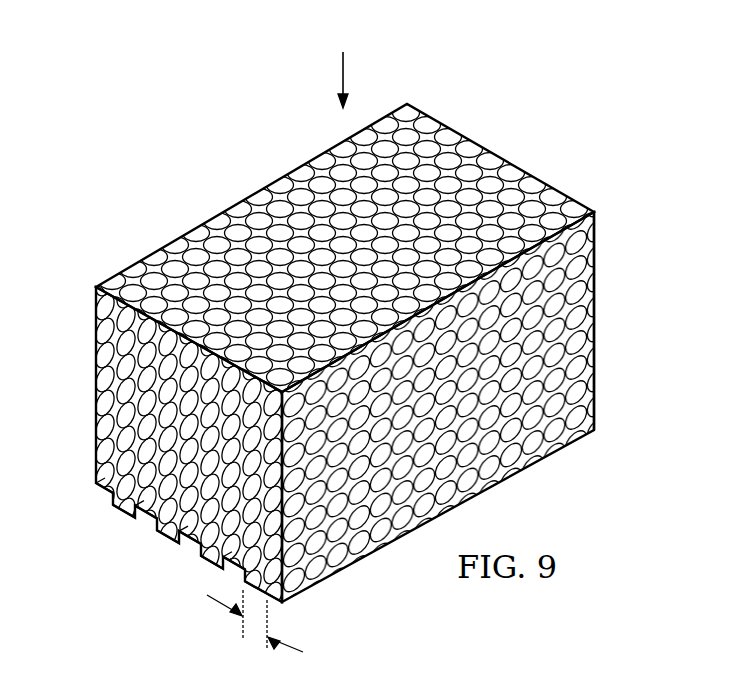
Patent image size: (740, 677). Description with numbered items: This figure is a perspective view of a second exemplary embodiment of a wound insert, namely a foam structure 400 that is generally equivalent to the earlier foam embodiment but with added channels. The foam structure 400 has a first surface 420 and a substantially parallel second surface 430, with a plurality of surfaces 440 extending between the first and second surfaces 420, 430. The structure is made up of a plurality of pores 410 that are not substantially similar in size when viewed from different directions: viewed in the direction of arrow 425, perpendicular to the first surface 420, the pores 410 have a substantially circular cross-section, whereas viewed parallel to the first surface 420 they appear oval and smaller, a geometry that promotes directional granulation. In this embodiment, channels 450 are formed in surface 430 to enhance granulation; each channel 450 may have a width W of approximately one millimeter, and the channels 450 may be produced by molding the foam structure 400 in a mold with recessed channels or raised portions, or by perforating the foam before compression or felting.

The foam structure 400 is at (346, 342).
The pores 410 is at (96, 332).
The first surface 420 is at (266, 206).
The arrow 425 is at (340, 84).
The second surface 430 is at (570, 440).
The surfaces 440 is at (596, 300).
The channels 450 is at (122, 500).
The width W is at (255, 629).